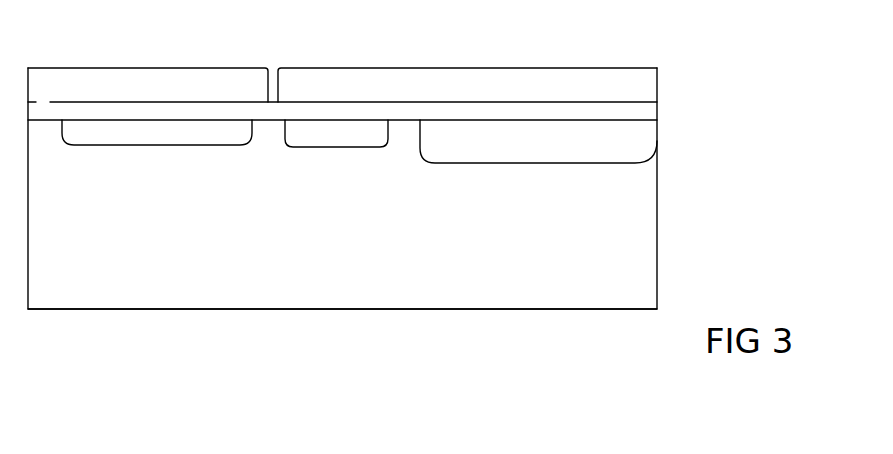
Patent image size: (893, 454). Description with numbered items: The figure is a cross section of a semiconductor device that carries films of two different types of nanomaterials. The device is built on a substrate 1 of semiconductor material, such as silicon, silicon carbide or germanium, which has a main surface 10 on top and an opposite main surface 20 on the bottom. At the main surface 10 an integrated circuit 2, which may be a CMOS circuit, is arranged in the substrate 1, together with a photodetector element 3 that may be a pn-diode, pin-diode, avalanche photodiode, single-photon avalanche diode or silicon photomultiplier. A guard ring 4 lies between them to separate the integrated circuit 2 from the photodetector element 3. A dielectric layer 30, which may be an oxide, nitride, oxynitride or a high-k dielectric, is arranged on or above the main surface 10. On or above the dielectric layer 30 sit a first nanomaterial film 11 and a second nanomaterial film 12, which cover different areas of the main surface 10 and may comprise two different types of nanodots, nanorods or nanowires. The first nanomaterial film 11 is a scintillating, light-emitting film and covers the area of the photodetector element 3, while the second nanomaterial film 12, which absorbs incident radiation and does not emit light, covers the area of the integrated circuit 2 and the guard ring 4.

The substrate 1 is at (625, 247).
The integrated circuit 2 is at (633, 138).
The photodetector element 3 is at (198, 139).
The guard ring 4 is at (375, 137).
The main surface 10 is at (272, 121).
The first nanomaterial film 11 is at (247, 80).
The second nanomaterial film 12 is at (358, 82).
The opposite main surface 20 is at (275, 309).
The dielectric layer 30 is at (628, 110).